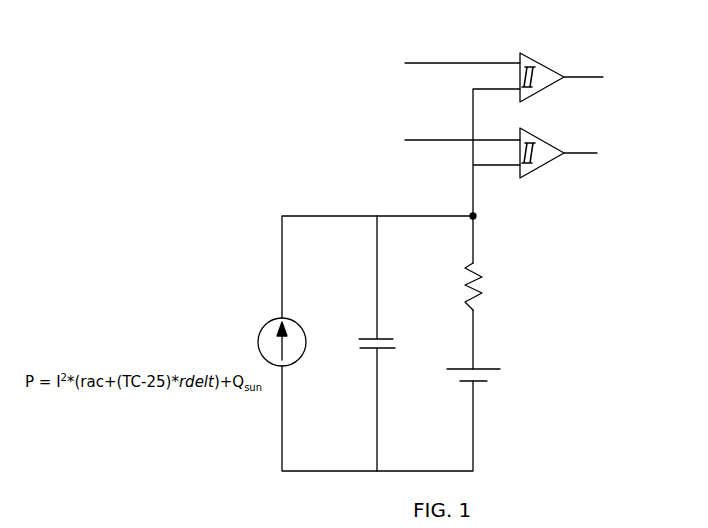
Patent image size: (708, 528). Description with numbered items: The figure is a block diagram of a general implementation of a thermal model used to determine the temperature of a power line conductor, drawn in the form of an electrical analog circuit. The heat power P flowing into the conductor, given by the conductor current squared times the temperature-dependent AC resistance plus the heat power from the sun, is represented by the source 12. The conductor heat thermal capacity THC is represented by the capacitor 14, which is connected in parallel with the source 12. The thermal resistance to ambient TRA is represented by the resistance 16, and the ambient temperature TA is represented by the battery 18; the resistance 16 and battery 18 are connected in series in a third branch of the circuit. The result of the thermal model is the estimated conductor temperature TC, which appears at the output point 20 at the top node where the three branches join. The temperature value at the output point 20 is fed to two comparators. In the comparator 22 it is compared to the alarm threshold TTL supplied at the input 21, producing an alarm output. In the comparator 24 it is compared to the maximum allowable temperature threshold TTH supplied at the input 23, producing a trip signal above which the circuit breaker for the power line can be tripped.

The source 12 is at (261, 328).
The capacitor 14 is at (384, 351).
The resistance 16 is at (485, 280).
The battery 18 is at (480, 383).
The output point 20 is at (477, 214).
The input 21 is at (460, 138).
The comparator 22 is at (544, 171).
The input 23 is at (463, 60).
The comparator 24 is at (546, 64).